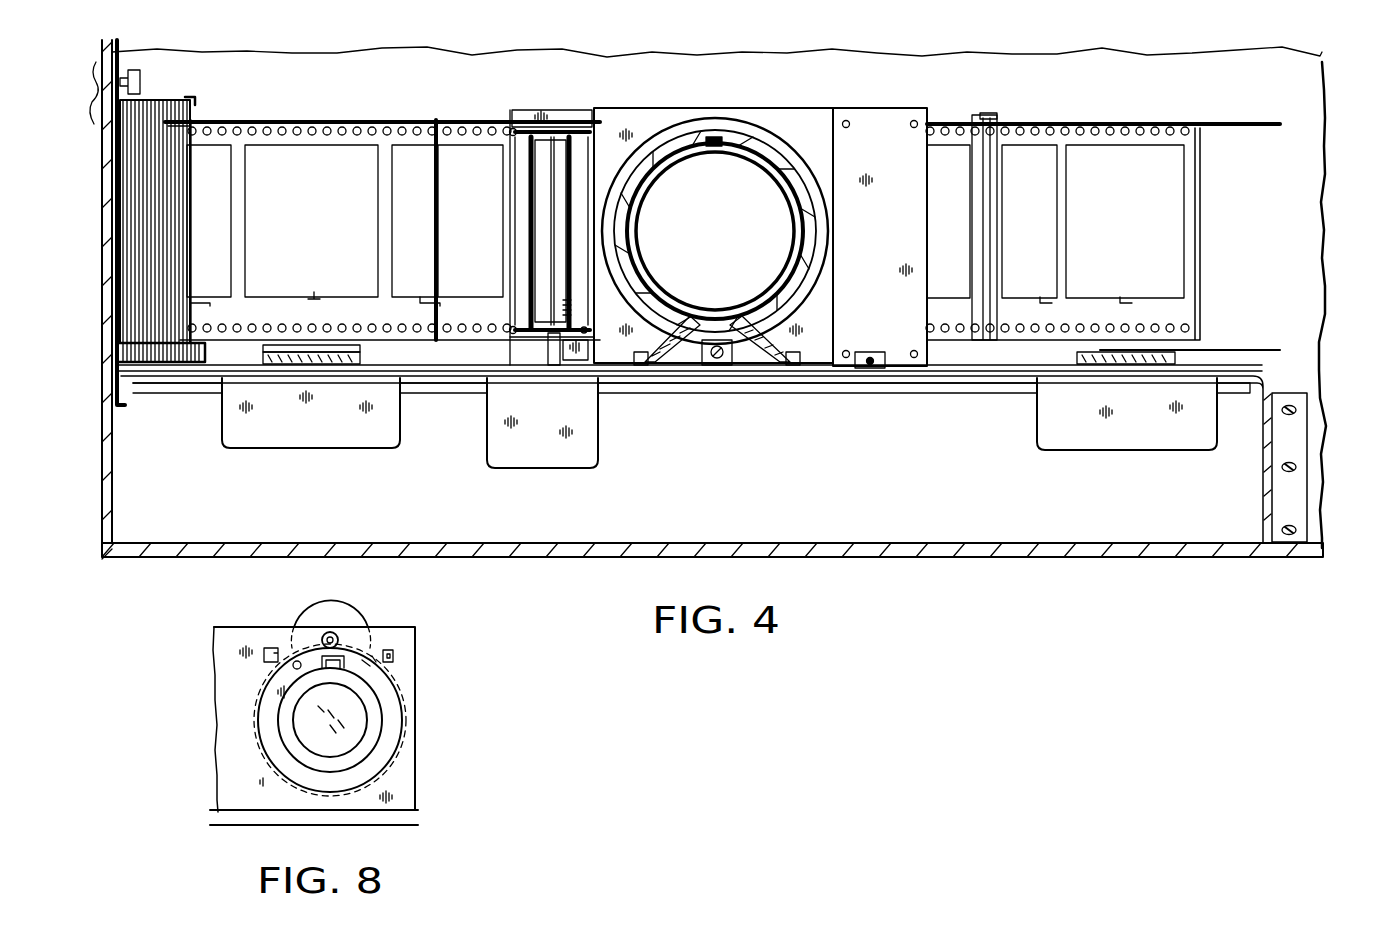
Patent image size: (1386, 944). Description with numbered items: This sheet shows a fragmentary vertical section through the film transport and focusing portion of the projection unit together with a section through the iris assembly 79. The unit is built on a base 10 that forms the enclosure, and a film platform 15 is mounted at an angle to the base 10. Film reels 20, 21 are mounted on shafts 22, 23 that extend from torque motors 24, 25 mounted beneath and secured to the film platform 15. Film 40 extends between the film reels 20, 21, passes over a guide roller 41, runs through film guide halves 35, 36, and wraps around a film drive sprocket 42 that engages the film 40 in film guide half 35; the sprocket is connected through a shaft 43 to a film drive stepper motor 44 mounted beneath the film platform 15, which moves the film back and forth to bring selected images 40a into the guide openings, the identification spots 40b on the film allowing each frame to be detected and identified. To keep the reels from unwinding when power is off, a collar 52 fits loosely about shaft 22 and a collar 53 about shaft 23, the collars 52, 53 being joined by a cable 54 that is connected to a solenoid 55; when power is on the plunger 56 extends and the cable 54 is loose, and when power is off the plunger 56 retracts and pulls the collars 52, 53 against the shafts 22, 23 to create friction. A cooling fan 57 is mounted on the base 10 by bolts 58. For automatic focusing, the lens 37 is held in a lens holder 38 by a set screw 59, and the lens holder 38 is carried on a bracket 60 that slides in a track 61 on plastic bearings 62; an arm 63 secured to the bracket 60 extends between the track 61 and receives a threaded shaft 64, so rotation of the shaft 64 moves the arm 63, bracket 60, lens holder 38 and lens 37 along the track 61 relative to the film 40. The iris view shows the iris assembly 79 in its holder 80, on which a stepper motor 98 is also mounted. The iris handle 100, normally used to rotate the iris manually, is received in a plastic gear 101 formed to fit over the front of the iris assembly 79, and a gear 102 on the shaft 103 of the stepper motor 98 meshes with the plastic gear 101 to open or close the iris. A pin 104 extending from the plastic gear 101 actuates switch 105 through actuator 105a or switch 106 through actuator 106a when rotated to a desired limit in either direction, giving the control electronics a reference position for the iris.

In FIG. 4, the base 10 is at (582, 560).
In FIG. 8, the base 10 is at (243, 815).
In FIG. 4, the film platform 15 is at (1018, 378).
In FIG. 4, the film reel 20 is at (240, 131).
In FIG. 4, the film reel 21 is at (1246, 123).
In FIG. 4, the shaft 22 is at (287, 348).
In FIG. 4, the shaft 23 is at (1112, 350).
In FIG. 4, the torque motor 24 is at (304, 446).
In FIG. 4, the torque motor 25 is at (1155, 435).
In FIG. 4, the film guide half 35 is at (568, 131).
In FIG. 4, the film guide half 36 is at (614, 114).
In FIG. 4, the lens 37 is at (760, 171).
In FIG. 4, the lens holder 38 is at (737, 156).
In FIG. 4, the film 40 is at (443, 108).
In FIG. 4, the images 40a is at (295, 156).
In FIG. 4, the identification markings or spots 40b is at (315, 294).
In FIG. 4, the guide roller 41 is at (978, 116).
In FIG. 4, the film drive sprocket 42 is at (552, 111).
In FIG. 4, the shaft 43 is at (547, 345).
In FIG. 4, the film drive stepper motor 44 is at (495, 450).
In FIG. 4, the collar 52 is at (265, 377).
In FIG. 4, the collar 53 is at (1098, 377).
In FIG. 4, the cable 54 is at (957, 371).
In FIG. 4, the solenoid 55 is at (860, 372).
In FIG. 4, the plunger 56 is at (872, 365).
In FIG. 4, the cooling fan 57 is at (172, 102).
In FIG. 4, the bolts 58 is at (116, 122).
In FIG. 4, the set screw 59 is at (702, 141).
In FIG. 4, the bracket 60 is at (750, 365).
In FIG. 4, the track 61 is at (646, 363).
In FIG. 4, the plastic bearings 62 is at (657, 358).
In FIG. 4, the arm 63 is at (718, 365).
In FIG. 4, the threaded shaft 64 is at (705, 365).
In FIG. 8, the iris assembly 79 is at (372, 737).
In FIG. 8, the holder 80 is at (407, 780).
In FIG. 8, the stepper motor 98 is at (308, 612).
In FIG. 8, the handle 100 is at (355, 662).
In FIG. 8, the plastic gear 101 is at (385, 708).
In FIG. 8, the gear 102 is at (342, 636).
In FIG. 8, the shaft 103 is at (329, 630).
In FIG. 8, the pin 104 is at (288, 676).
In FIG. 8, the switch 105 is at (267, 653).
In FIG. 8, the actuator 105a is at (300, 657).
In FIG. 8, the switch 106 is at (390, 654).
In FIG. 8, the actuator 106a is at (378, 658).